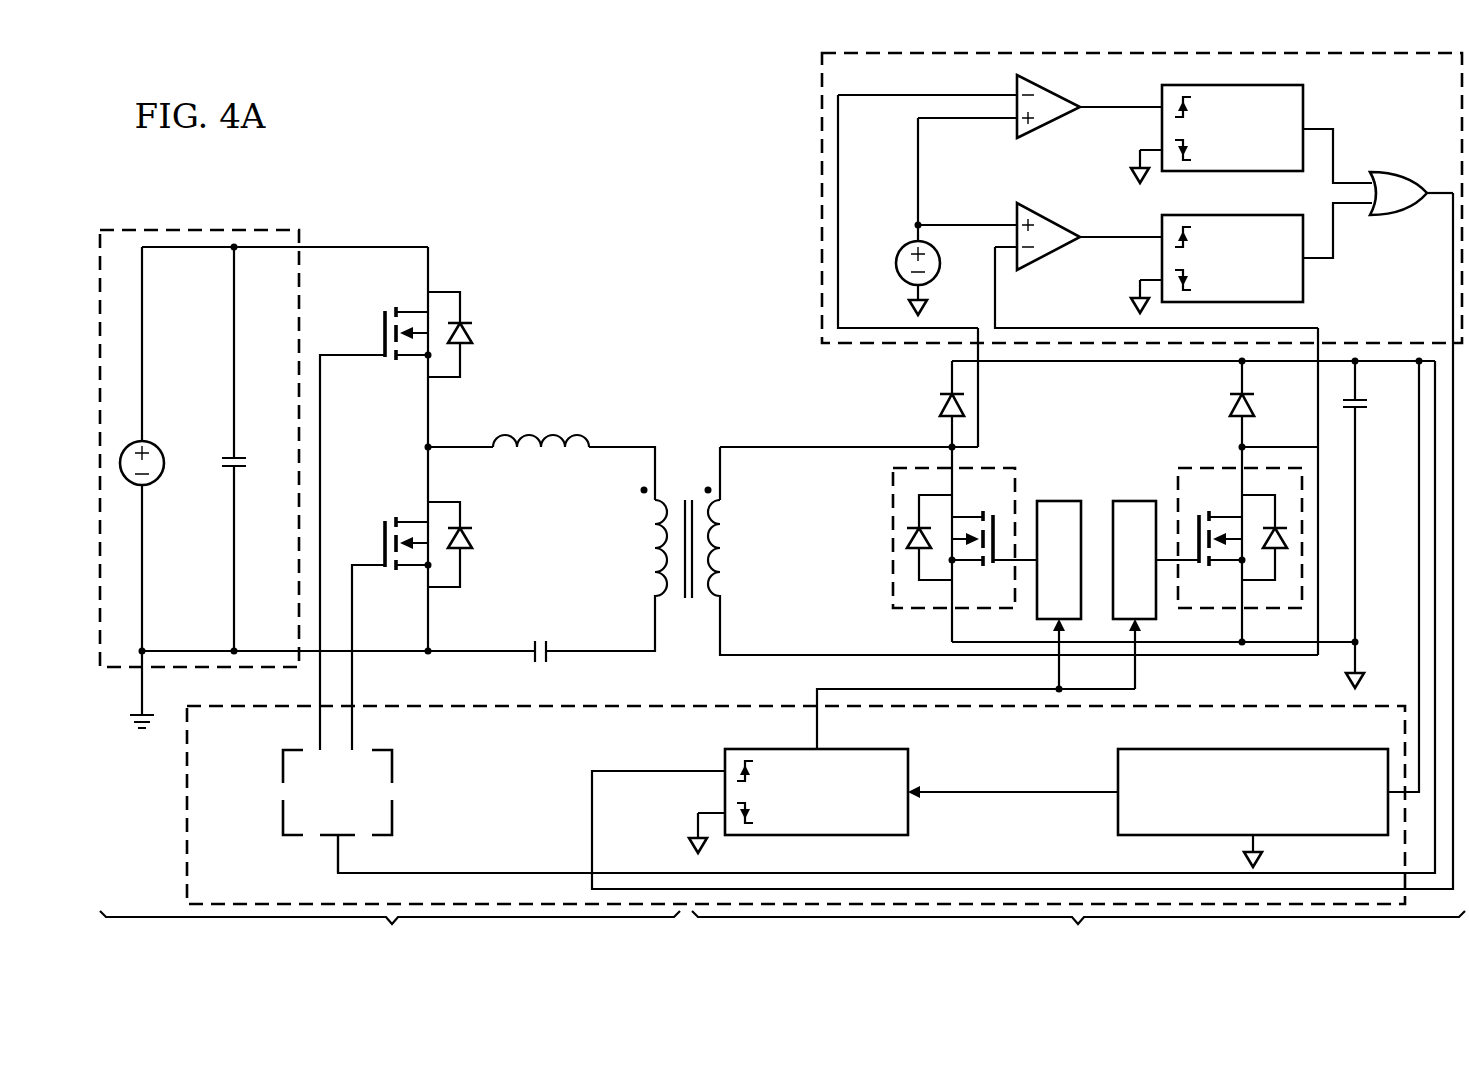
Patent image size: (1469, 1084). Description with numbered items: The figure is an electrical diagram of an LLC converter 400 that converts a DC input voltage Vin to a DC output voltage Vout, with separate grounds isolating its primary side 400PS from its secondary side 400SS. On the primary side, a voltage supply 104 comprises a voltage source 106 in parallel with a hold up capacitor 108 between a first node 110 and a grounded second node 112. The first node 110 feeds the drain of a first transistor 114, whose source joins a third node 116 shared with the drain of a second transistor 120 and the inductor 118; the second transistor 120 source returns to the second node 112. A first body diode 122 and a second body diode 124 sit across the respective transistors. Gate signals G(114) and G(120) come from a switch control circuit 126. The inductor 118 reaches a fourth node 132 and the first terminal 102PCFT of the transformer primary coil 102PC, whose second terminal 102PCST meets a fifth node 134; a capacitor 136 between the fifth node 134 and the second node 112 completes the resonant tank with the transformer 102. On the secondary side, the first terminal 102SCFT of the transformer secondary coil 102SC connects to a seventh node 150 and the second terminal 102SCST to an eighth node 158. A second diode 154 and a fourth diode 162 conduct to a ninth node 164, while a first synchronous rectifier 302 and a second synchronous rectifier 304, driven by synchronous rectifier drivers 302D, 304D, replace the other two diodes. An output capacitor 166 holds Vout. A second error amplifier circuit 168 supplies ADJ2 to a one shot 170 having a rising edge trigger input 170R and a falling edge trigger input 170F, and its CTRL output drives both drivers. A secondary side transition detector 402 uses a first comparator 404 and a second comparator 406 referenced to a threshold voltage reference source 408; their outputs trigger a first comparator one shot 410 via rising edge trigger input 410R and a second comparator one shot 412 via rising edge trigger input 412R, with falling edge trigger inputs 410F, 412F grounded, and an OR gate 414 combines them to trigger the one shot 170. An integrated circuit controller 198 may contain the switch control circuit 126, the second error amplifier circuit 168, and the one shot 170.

The LLC converter 400 is at (380, 100).
The voltage supply 104 is at (185, 228).
The voltage source 106 is at (158, 445).
The capacitor 108 is at (246, 460).
The first node 110 is at (353, 247).
The second node 112 is at (188, 650).
The first transistor 114 is at (384, 322).
The third node 116 is at (426, 418).
The inductor 118 is at (553, 424).
The second transistor 120 is at (385, 521).
The first body diode 122 is at (468, 332).
The second body diode 124 is at (466, 572).
The switch control circuit 126 is at (275, 822).
The fourth node 132 is at (628, 446).
The fifth node 134 is at (600, 650).
The capacitor 136 is at (532, 660).
The transformer 102 is at (689, 492).
The first terminal of the transformer primary coil 102PCFT is at (650, 506).
The transformer primary coil 102PC is at (660, 543).
The second terminal of the transformer primary coil 102PCST is at (652, 592).
The first terminal of the transformer secondary coil 102SCFT is at (725, 506).
The transformer secondary coil 102SC is at (716, 543).
The second terminal of the transformer secondary coil 102SCST is at (724, 592).
The seventh node 150 is at (775, 446).
The eighth node 158 is at (775, 654).
The second diode 154 is at (940, 402).
The fourth diode 162 is at (1235, 400).
The ninth node 164 is at (1100, 363).
The output capacitor 166 is at (1362, 405).
The second error amplifier circuit 168 is at (1107, 820).
The one shot 170 is at (922, 810).
The rising edge trigger input 170R is at (722, 768).
The falling edge trigger input 170F is at (692, 824).
The integrated circuit controller 198 is at (178, 822).
The first synchronous rectifier 302 is at (1000, 466).
The synchronous rectifier driver 302D is at (1065, 499).
The second synchronous rectifier 304 is at (1220, 466).
The synchronous rectifier driver 304D is at (1140, 499).
The secondary side transition detector 402 is at (815, 158).
The first comparator 404 is at (1015, 85).
The second comparator 406 is at (1015, 215).
The threshold voltage reference source 408 is at (905, 247).
The first comparator one shot 410 is at (1315, 114).
The rising edge trigger input 410R is at (1150, 105).
The falling edge trigger input 410F is at (1135, 160).
The second comparator one shot 412 is at (1315, 276).
The rising edge trigger input 412R is at (1150, 235).
The falling edge trigger input 412F is at (1135, 290).
The OR gate 414 is at (1392, 172).
The primary side 400PS is at (390, 937).
The secondary side 400SS is at (1078, 937).